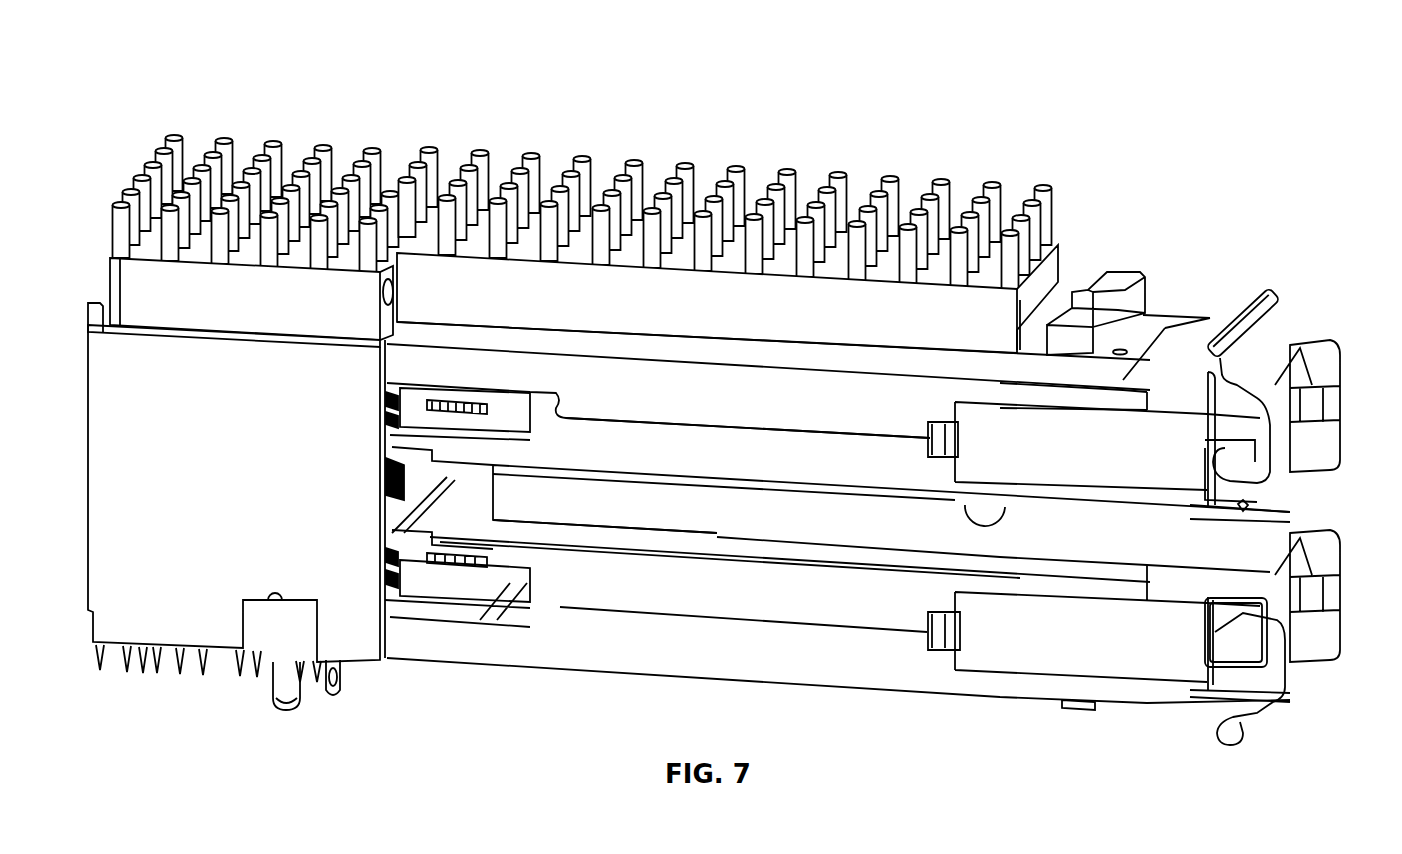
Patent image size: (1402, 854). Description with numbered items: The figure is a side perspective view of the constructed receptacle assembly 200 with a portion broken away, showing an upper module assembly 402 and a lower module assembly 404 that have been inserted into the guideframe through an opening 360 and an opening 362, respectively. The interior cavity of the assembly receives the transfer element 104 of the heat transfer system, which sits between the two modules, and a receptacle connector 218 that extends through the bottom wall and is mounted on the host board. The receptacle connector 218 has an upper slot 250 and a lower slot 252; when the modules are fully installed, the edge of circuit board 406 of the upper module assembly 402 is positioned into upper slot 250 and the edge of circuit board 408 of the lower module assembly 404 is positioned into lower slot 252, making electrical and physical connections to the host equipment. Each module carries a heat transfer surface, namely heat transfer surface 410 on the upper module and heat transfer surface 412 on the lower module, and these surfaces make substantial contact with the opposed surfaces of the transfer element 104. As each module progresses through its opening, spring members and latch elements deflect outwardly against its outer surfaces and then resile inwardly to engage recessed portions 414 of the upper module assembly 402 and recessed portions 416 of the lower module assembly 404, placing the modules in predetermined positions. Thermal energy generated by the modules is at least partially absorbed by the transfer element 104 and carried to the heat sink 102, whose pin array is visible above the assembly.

The receptacle assembly 200 is at (165, 80).
The heat sink 102 is at (710, 317).
The transfer element 104 is at (729, 521).
The receptacle connector 218 is at (243, 482).
The upper slot 250 is at (410, 418).
The lower slot 252 is at (410, 570).
The opening 360 is at (1160, 288).
The opening 362 is at (1100, 716).
The upper module assembly 402 is at (1345, 322).
The lower module assembly 404 is at (1345, 540).
The circuit board 406 is at (525, 415).
The circuit board 408 is at (487, 577).
The heat transfer surface 410 is at (467, 484).
The heat transfer surface 412 is at (489, 536).
The recessed portions 414 is at (940, 435).
The recessed portions 416 is at (940, 628).